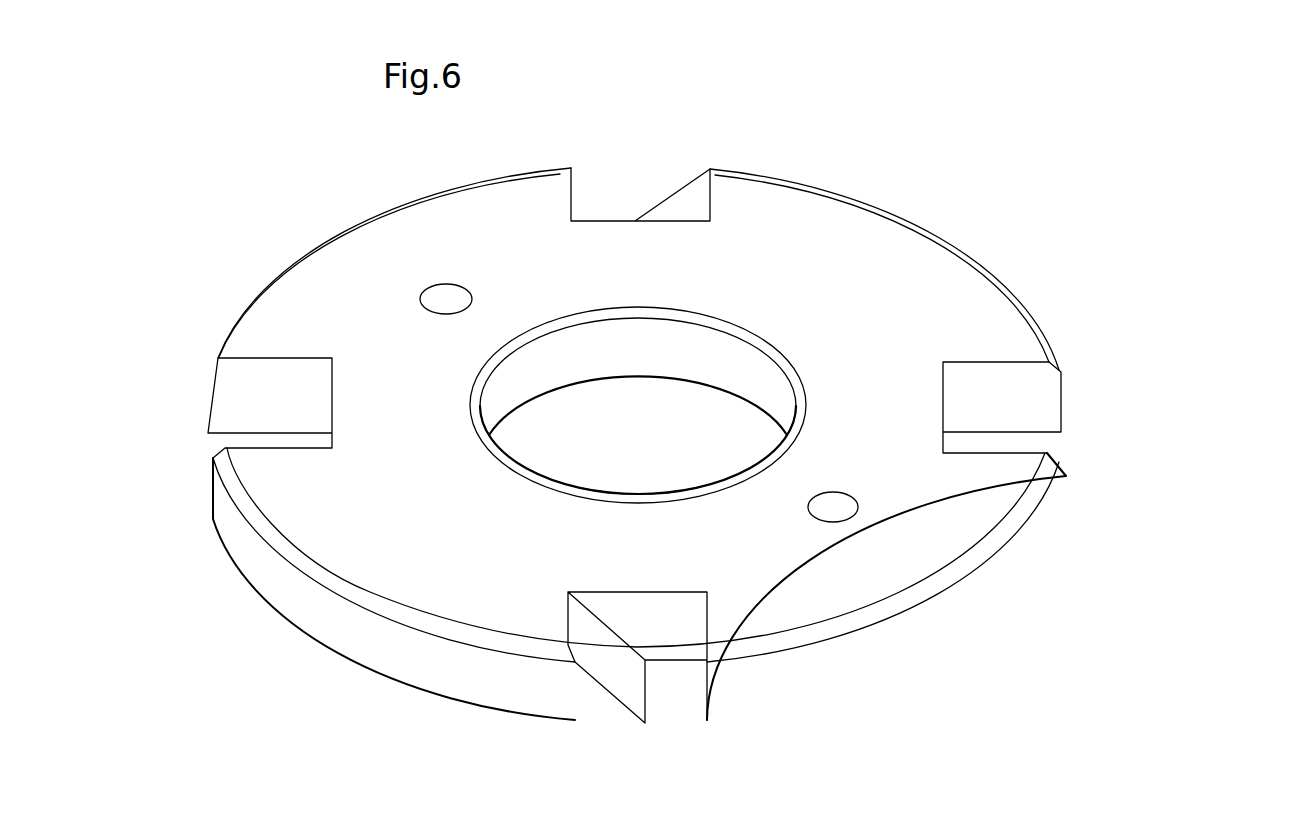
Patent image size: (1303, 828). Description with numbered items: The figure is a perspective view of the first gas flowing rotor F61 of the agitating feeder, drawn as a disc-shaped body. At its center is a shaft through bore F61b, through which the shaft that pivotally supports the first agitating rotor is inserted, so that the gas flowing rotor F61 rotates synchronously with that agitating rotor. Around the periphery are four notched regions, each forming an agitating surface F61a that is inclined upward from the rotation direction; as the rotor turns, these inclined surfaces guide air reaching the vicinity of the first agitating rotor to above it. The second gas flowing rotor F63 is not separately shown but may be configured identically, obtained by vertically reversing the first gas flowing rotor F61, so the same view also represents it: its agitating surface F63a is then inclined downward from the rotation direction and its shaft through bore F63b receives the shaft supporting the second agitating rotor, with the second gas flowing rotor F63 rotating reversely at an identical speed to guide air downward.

The first gas flowing rotor F61 is at (704, 386).
The second gas flowing rotor F63 is at (704, 386).
The agitating surface F61a is at (704, 406).
The agitating surface F63a is at (700, 207).
The shaft through bore F61b is at (696, 305).
The shaft through bore F63b is at (660, 348).